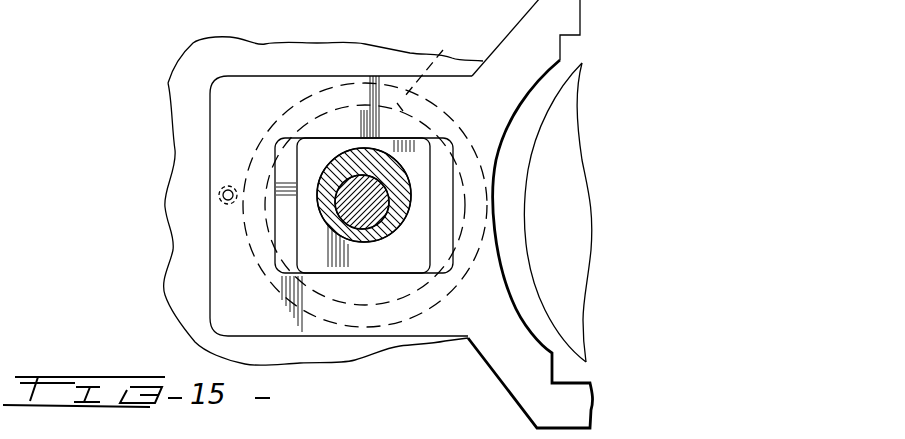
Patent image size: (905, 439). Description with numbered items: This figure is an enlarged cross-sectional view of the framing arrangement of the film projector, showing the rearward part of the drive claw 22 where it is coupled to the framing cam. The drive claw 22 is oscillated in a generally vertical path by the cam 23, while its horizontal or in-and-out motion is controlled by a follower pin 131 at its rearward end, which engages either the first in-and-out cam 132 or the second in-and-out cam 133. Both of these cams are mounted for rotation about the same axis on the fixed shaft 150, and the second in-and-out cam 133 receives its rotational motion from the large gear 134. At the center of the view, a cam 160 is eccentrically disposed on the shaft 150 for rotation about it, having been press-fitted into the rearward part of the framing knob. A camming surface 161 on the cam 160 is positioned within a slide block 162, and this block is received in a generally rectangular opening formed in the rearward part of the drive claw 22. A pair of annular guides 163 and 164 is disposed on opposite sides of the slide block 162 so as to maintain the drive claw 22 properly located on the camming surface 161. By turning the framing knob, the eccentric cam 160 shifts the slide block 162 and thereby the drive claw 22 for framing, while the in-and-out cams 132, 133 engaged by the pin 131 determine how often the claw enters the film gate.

The drive claw 22 is at (567, 17).
The cam 23 is at (572, 225).
The pin 131 is at (224, 200).
The first in-and-out cam 132 is at (463, 197).
The second in-and-out cam 133 is at (453, 289).
The large gear 134 is at (209, 50).
The fixed shaft 150 is at (363, 226).
The cam 160 is at (397, 176).
The camming surface 161 is at (375, 147).
The slide block 162 is at (315, 150).
The annular guide 163 is at (289, 138).
The annular guide 164 is at (437, 71).